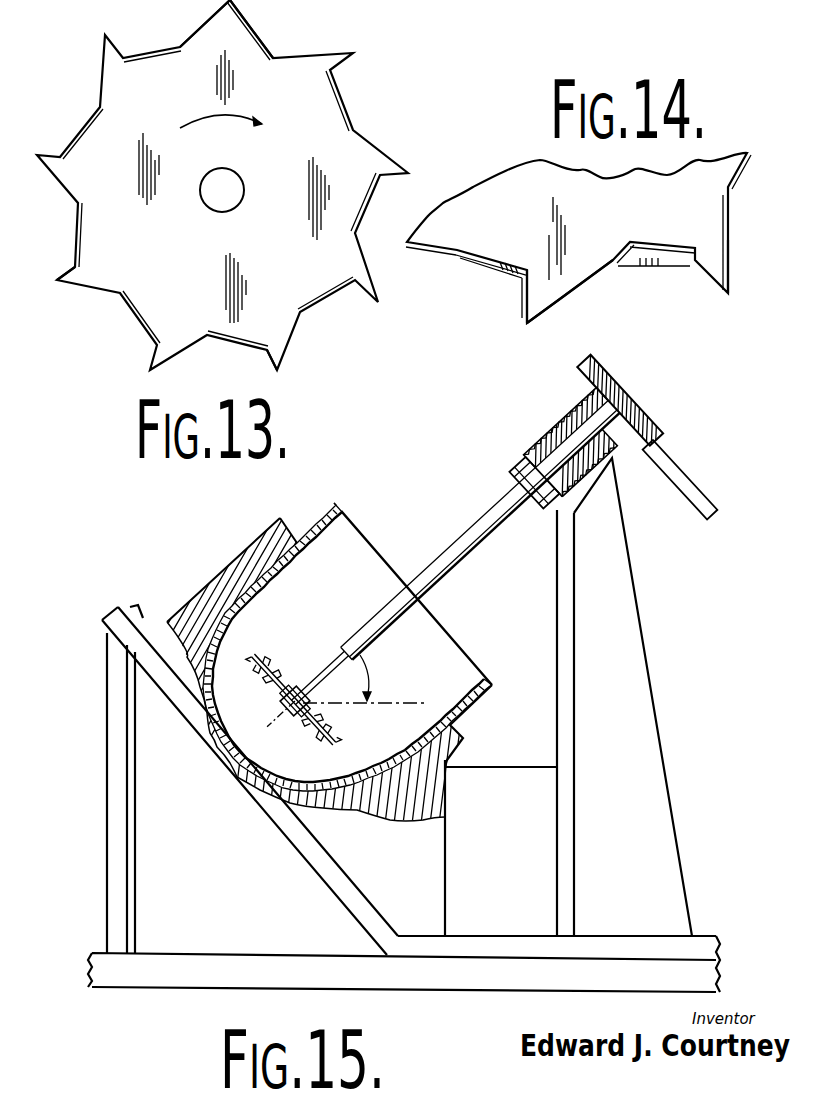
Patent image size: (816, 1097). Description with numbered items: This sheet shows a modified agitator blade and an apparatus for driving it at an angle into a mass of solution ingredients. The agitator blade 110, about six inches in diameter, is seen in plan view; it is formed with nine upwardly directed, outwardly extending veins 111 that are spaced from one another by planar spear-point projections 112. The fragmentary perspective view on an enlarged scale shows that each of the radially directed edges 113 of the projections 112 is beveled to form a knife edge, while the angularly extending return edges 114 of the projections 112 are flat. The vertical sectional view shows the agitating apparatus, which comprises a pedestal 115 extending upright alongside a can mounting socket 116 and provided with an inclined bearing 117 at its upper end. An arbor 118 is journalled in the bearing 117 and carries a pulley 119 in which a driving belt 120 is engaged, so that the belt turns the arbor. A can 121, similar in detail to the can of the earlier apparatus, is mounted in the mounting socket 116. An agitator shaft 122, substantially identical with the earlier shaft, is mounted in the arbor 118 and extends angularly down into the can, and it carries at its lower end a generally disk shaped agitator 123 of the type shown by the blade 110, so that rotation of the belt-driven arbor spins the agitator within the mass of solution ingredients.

In FIG. 13, the agitator blade 110 is at (359, 130).
In FIG. 13, the veins 111 is at (268, 48).
In FIG. 13, the spear-point projections 112 is at (201, 27).
In FIG. 14, the spear-point projections 112 is at (538, 302).
In FIG. 13, the radially directed edges 113 is at (67, 272).
In FIG. 14, the radially directed edges 113 is at (520, 306).
In FIG. 14, the return edges 114 is at (582, 288).
In FIG. 15, the pedestal 115 is at (647, 653).
In FIG. 15, the can mounting socket 116 is at (247, 547).
In FIG. 15, the inclined bearing 117 is at (557, 428).
In FIG. 15, the arbor 118 is at (503, 492).
In FIG. 15, the pulley 119 is at (617, 380).
In FIG. 15, the driving belt 120 is at (692, 477).
In FIG. 15, the can 121 is at (320, 506).
In FIG. 15, the agitator shaft 122 is at (372, 617).
In FIG. 15, the agitator 123 is at (312, 642).